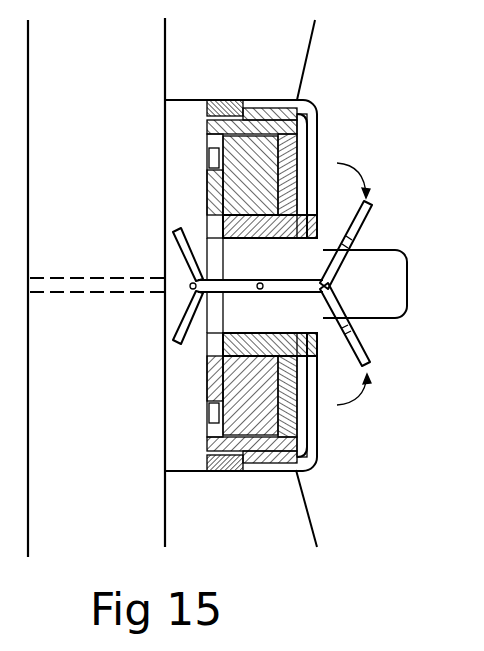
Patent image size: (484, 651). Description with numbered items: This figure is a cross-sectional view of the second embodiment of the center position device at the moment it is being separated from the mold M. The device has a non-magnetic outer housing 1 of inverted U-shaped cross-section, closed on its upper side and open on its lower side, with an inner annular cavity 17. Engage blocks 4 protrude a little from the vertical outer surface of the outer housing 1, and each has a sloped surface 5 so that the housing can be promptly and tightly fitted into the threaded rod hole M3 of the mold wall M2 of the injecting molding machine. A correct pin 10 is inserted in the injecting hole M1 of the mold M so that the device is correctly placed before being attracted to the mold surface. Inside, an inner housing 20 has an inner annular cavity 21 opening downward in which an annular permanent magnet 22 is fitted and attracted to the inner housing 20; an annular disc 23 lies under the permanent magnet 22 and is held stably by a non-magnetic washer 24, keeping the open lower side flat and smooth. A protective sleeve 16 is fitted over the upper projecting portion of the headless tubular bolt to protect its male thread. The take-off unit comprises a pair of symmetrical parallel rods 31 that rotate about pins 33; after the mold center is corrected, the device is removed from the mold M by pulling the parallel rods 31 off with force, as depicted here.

The outer housing 1 is at (320, 148).
The engage block 4 is at (218, 100).
The sloped surface 5 is at (246, 99).
The correct pin 10 is at (195, 291).
The protective sleeve 16 is at (407, 282).
The inner annular cavity 17 is at (290, 206).
The inner housing 20 is at (207, 123).
The inner annular cavity 21 is at (222, 140).
The annular permanent magnet 22 is at (208, 198).
The annular disc 23 is at (240, 174).
The washer 24 is at (214, 148).
The parallel rod 31 is at (362, 222).
The pin 33 is at (255, 280).
The mold M is at (162, 40).
The injecting hole M1 is at (50, 288).
The mold wall M2 is at (300, 48).
The threaded rod hole M3 is at (295, 100).